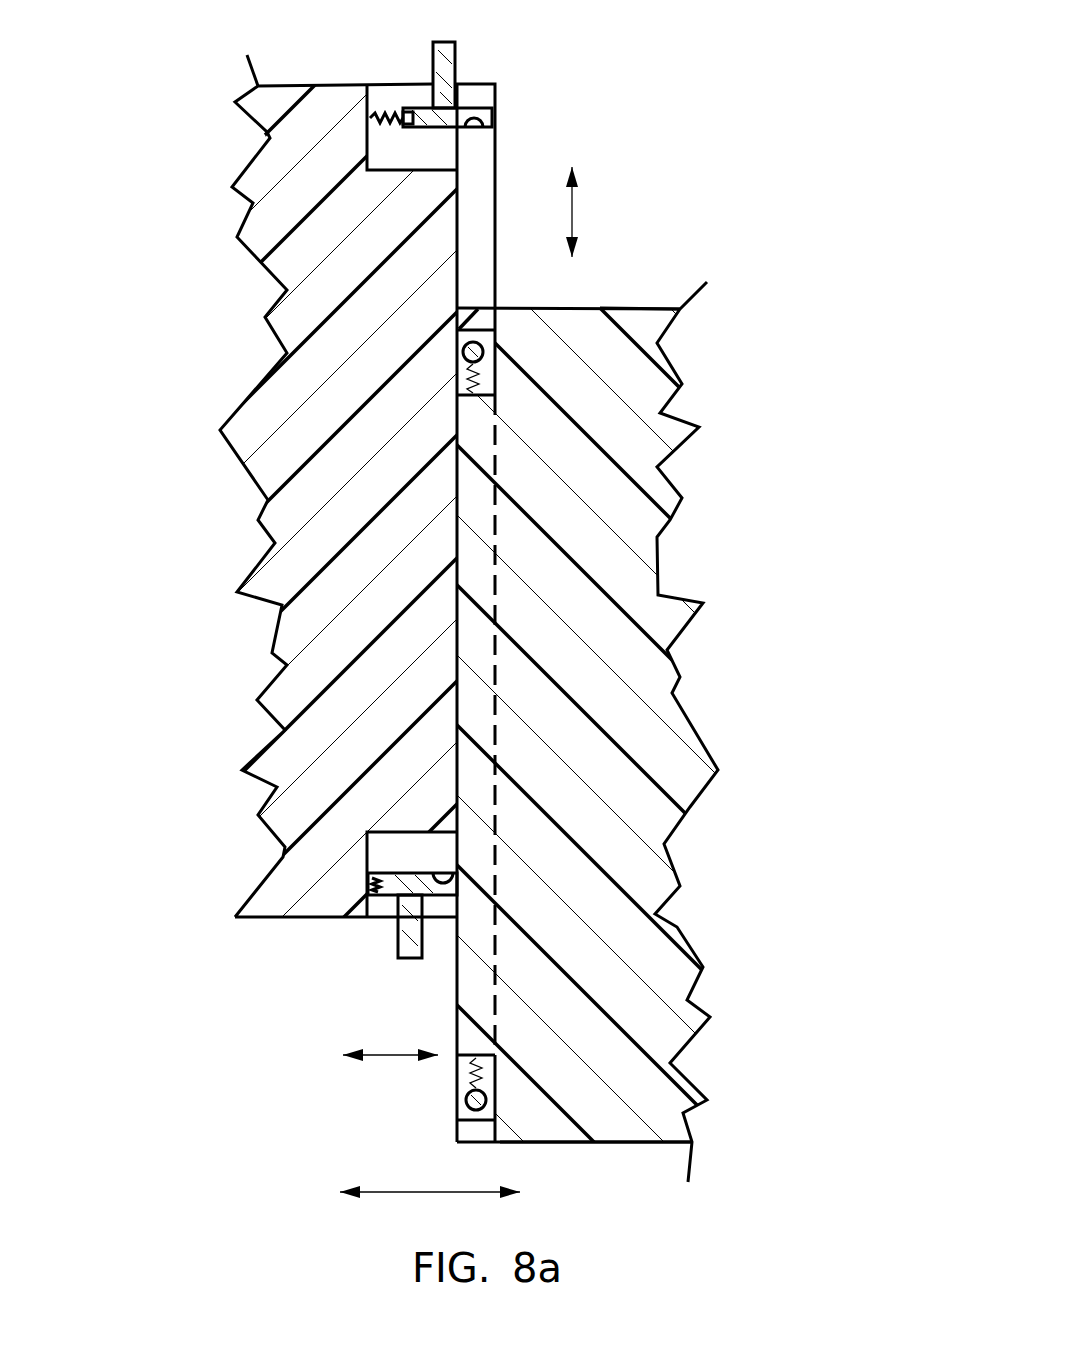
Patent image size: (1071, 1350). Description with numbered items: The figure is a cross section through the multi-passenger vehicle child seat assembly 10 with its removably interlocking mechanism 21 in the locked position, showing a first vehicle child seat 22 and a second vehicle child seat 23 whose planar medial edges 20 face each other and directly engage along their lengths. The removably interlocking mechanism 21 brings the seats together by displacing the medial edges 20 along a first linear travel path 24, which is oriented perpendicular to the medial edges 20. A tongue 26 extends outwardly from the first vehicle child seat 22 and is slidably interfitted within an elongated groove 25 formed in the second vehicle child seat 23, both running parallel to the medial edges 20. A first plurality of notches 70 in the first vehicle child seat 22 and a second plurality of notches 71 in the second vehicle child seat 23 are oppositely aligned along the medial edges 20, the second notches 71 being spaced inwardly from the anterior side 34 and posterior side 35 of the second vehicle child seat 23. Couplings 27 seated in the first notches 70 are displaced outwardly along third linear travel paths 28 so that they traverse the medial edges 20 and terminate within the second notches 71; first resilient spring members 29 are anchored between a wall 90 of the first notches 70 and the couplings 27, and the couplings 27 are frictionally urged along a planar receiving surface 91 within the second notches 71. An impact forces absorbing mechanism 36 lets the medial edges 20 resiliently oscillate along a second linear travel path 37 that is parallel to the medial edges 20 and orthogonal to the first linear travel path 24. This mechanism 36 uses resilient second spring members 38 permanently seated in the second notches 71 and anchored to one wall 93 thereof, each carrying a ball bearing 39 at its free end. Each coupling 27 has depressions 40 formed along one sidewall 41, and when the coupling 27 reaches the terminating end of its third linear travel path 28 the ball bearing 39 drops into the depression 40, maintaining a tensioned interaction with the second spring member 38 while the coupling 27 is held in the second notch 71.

The multi-passenger vehicle child seat assembly 10 is at (800, 137).
The planar medial edges 20 is at (459, 247).
The removably interlocking mechanism 21 is at (500, 84).
The first vehicle child seat 22 is at (250, 626).
The second vehicle child seat 23 is at (707, 727).
The first linear travel path 24 is at (400, 1195).
The elongated groove 25 is at (480, 970).
The tongue 26 is at (476, 291).
The couplings 27 is at (447, 78).
The third linear travel paths 28 is at (392, 1057).
The first resilient spring members 29 is at (392, 114).
The anterior side 34 is at (578, 1143).
The posterior side 35 is at (661, 307).
The impact forces absorbing mechanism 36 is at (500, 340).
The second linear travel path 37 is at (574, 213).
The resilient second spring members 38 is at (456, 378).
The ball bearings 39 is at (455, 340).
The depressions 40 is at (488, 110).
The sidewall 41 is at (472, 128).
The first plurality of notches 70 is at (425, 97).
The second plurality of notches 71 is at (487, 372).
The wall of the first plurality of notches 90 is at (363, 145).
The planar receiving surface 91 is at (495, 392).
The wall of the second plurality of notches 93 is at (482, 400).